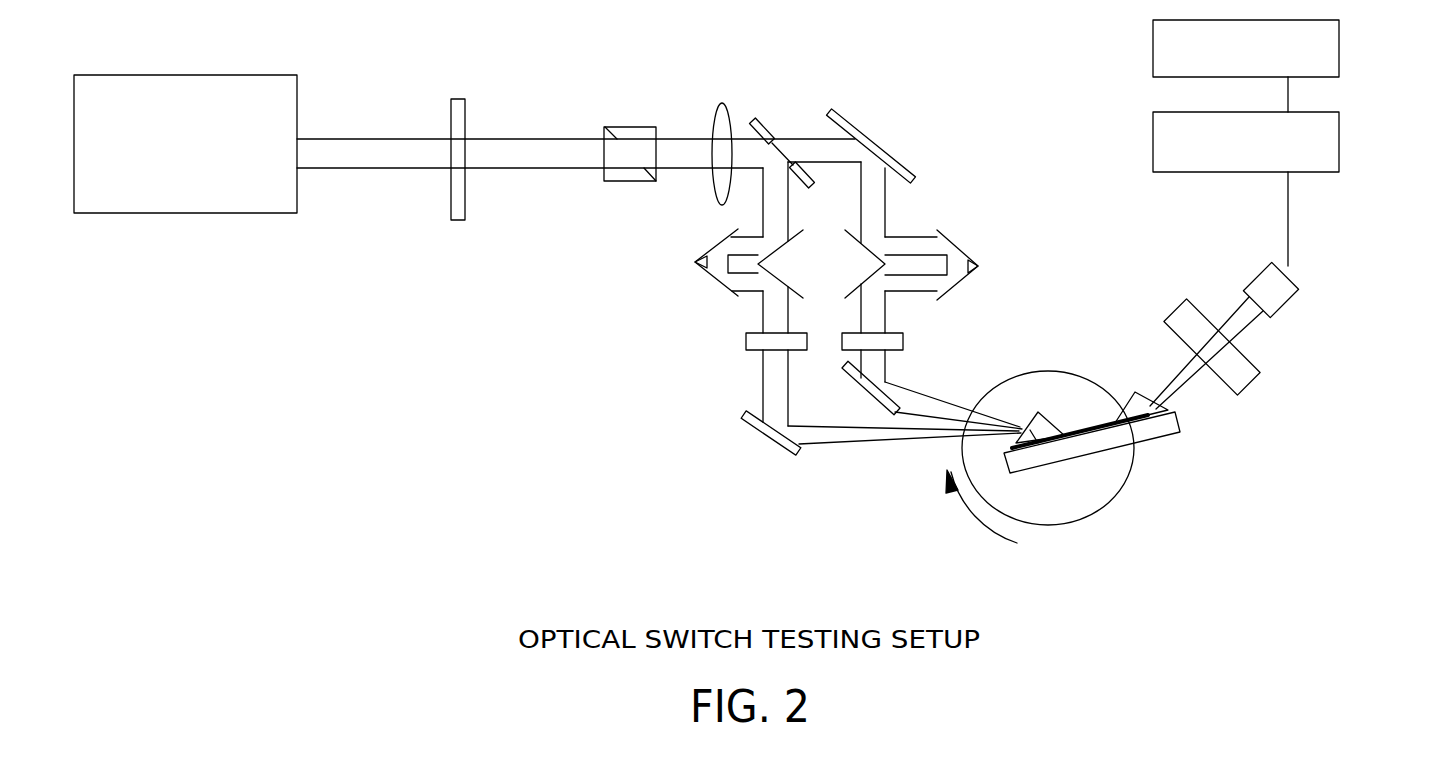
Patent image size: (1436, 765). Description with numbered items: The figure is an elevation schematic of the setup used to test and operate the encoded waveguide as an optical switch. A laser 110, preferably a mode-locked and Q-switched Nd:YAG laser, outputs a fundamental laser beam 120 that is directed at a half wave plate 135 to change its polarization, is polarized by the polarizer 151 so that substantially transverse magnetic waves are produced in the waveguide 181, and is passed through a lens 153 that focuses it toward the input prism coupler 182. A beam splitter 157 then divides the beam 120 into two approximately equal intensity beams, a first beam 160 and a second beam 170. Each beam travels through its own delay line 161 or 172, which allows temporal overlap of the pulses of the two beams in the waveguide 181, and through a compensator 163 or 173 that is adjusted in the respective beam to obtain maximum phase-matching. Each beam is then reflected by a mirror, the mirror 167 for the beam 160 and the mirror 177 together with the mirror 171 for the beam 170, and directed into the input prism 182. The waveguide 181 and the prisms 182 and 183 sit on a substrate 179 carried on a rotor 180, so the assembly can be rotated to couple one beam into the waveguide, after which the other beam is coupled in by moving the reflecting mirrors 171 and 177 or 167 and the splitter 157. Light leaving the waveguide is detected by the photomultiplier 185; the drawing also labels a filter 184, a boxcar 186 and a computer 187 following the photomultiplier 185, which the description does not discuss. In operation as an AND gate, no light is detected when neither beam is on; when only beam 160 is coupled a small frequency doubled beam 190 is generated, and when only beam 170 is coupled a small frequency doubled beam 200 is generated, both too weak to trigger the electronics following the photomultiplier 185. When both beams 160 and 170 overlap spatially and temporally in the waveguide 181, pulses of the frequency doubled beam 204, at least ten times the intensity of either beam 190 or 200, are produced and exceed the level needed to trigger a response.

The laser 110 is at (140, 78).
The laser beam 120 is at (327, 162).
The half wave plate 135 is at (460, 212).
The polarizer 151 is at (628, 127).
The lens 153 is at (722, 103).
The beam splitter 157 is at (753, 118).
The reflecting mirror 171 is at (887, 150).
The first beam 160 is at (765, 200).
The delay line 161 is at (712, 280).
The compensator 163 is at (747, 340).
The reflecting mirror 167 is at (800, 455).
The second beam 170 is at (880, 222).
The delay line 172 is at (958, 250).
The compensator 173 is at (903, 342).
The reflecting mirror 177 is at (868, 388).
The substrate 179 is at (1177, 425).
The rotor 180 is at (1063, 513).
The waveguide 181 is at (1143, 428).
The input prism coupler 182 is at (1042, 428).
The prism 183 is at (1145, 400).
The filter C 184 is at (1183, 322).
The photomultiplier 185 is at (1280, 290).
The boxcar integrator 186 is at (1334, 143).
The computer 187 is at (1336, 53).
The frequency doubled beam 190 is at (1265, 353).
The frequency doubled beam 200 is at (1265, 353).
The frequency doubled beam 204 is at (1250, 328).